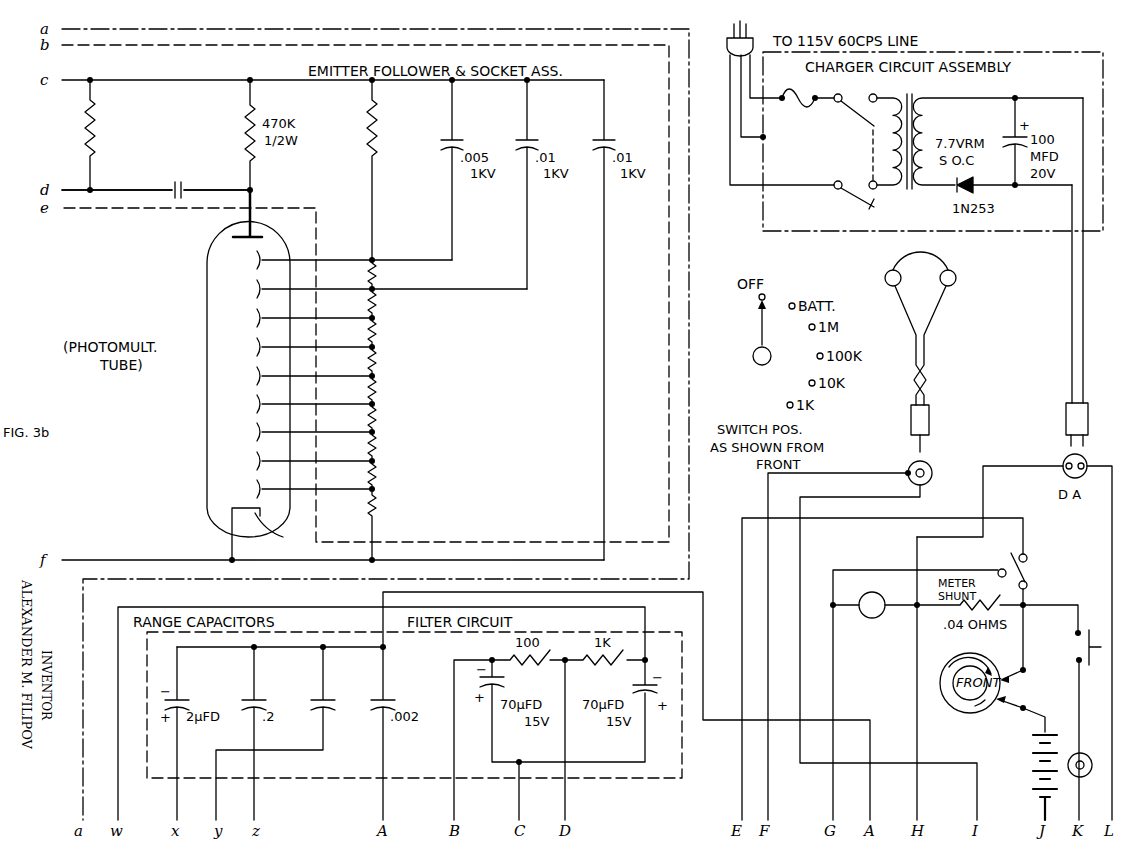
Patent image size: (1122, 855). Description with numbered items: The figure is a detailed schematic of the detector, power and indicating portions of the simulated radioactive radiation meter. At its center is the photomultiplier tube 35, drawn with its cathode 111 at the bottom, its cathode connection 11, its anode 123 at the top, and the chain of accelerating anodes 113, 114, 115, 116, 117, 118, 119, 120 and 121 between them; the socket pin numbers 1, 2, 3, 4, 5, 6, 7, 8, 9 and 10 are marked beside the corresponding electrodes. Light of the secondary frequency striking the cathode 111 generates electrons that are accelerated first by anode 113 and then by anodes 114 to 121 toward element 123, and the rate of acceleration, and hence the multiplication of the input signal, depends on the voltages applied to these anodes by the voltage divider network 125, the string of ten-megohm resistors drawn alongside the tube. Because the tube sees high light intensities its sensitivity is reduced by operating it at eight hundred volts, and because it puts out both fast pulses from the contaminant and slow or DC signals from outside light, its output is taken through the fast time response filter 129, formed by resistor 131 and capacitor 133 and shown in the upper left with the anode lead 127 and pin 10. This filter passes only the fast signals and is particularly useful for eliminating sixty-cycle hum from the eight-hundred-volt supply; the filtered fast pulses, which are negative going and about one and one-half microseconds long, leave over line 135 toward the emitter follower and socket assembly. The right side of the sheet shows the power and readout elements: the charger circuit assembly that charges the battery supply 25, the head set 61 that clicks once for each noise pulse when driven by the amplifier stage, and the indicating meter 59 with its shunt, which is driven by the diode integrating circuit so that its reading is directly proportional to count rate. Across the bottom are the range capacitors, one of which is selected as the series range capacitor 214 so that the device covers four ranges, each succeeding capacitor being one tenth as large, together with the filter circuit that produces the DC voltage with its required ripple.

The resistor 131 is at (85, 135).
The line 135 is at (70, 189).
The fast time response filter means 129 is at (112, 193).
The capacitor 133 is at (172, 198).
The anode lead 127 is at (224, 196).
The anode 123 is at (252, 236).
The anode pin 10 is at (261, 213).
The anode 121 is at (330, 260).
The anode 120 is at (323, 289).
The anode 119 is at (323, 318).
The anode 118 is at (323, 347).
The anode 117 is at (323, 376).
The anode 116 is at (323, 404).
The anode 115 is at (323, 432).
The anode 114 is at (323, 461).
The anode 113 is at (323, 489).
The voltage divider network 125 is at (490, 430).
The photomultiplier tube 35 is at (207, 424).
The cathode 11 is at (235, 534).
The cathode 111 is at (279, 531).
The dynode 9 is at (354, 258).
The dynode 8 is at (392, 287).
The dynode 7 is at (314, 316).
The dynode 6 is at (314, 345).
The dynode 5 is at (314, 374).
The dynode 4 is at (314, 402).
The dynode 3 is at (314, 430).
The dynode 2 is at (314, 459).
The dynode 1 is at (314, 487).
The series range capacitor 214 is at (309, 759).
The head set 61 is at (950, 264).
The meter 59 is at (872, 592).
The battery supply 25 is at (1037, 765).